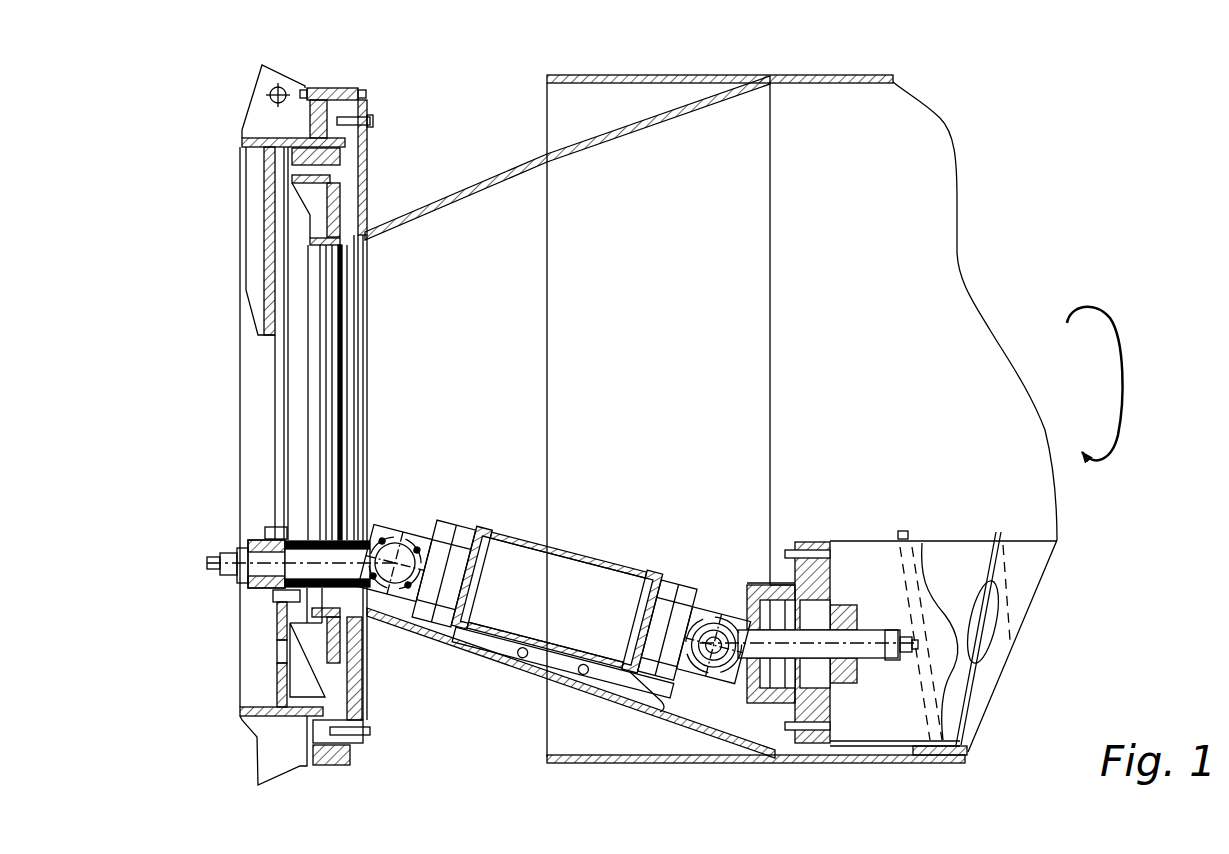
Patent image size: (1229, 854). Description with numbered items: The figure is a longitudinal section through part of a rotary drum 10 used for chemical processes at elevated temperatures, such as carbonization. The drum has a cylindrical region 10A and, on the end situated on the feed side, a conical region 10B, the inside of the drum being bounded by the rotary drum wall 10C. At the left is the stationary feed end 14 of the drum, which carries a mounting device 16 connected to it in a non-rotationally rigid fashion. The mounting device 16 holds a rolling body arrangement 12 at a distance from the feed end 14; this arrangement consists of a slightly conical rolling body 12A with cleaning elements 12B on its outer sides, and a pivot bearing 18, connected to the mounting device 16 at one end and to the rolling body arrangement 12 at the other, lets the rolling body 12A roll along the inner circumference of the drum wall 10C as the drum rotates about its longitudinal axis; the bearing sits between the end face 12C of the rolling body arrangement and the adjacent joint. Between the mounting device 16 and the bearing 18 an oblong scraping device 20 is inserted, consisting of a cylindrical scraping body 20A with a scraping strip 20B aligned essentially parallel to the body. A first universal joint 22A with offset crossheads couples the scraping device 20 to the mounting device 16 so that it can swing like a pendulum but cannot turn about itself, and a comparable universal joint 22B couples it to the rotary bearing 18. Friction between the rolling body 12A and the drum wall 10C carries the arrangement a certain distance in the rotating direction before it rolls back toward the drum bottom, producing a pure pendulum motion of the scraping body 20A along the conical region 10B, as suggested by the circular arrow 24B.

The rotary drum 10 is at (744, 436).
The cylindrical region 10A is at (970, 283).
The conical region 10B is at (457, 207).
The rotary drum wall 10C is at (775, 742).
The rolling body arrangement 12 is at (901, 636).
The rolling body 12A is at (960, 540).
The cleaning elements 12B is at (912, 760).
The end face 12C is at (772, 540).
The feed end 14 is at (277, 680).
The mounting device 16 is at (232, 535).
The pivot bearing 18 is at (746, 555).
The scraping device 20 is at (553, 633).
The scraping body 20A is at (556, 599).
The scraping strip 20B is at (563, 662).
The first universal joint 22A is at (395, 563).
The universal joint 22B is at (714, 645).
The circular arrow 24B is at (1000, 620).